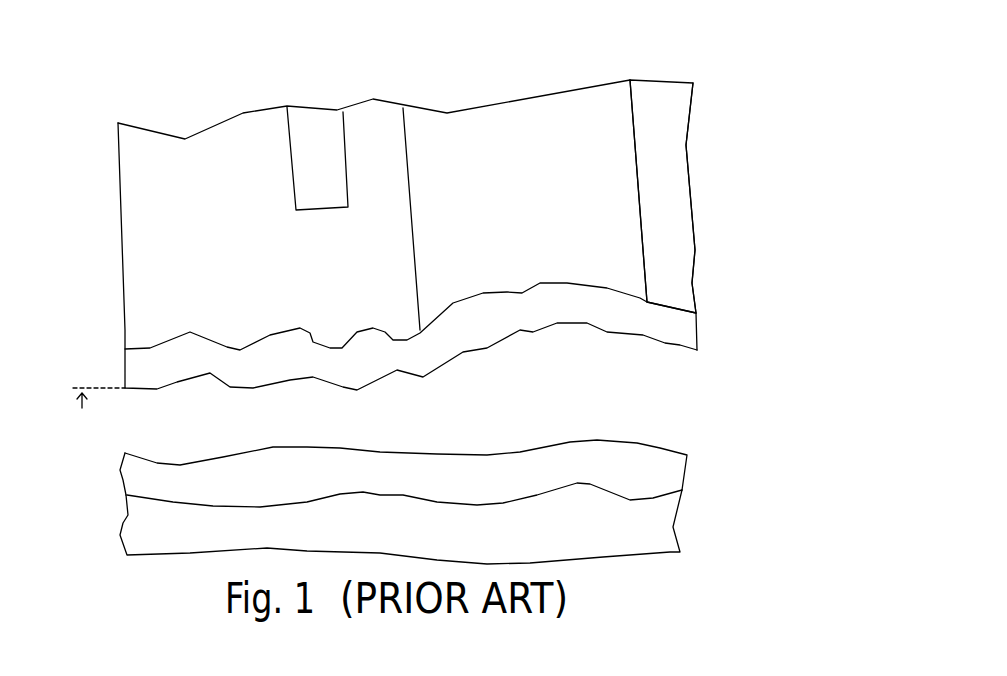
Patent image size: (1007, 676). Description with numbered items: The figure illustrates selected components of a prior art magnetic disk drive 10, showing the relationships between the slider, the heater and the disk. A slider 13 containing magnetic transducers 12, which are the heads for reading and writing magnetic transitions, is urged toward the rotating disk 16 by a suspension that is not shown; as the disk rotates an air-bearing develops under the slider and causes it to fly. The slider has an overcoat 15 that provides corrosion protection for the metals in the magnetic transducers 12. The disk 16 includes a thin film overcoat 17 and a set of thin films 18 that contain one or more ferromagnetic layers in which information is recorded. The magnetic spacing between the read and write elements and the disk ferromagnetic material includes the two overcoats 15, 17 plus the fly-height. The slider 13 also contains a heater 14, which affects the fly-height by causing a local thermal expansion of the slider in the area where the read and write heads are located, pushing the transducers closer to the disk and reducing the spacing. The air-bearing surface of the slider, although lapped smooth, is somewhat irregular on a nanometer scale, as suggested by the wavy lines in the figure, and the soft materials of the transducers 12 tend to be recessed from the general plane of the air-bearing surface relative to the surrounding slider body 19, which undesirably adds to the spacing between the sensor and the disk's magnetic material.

The magnetic disk drive 10 is at (637, 55).
The magnetic transducers 12 is at (502, 120).
The slider 13 is at (103, 327).
The heater 14 is at (305, 187).
The overcoat 15 is at (687, 330).
The rotating disk 16 is at (117, 498).
The thin film overcoat 17 is at (677, 473).
The set of thin films 18 is at (665, 516).
The slider body 19 is at (682, 198).